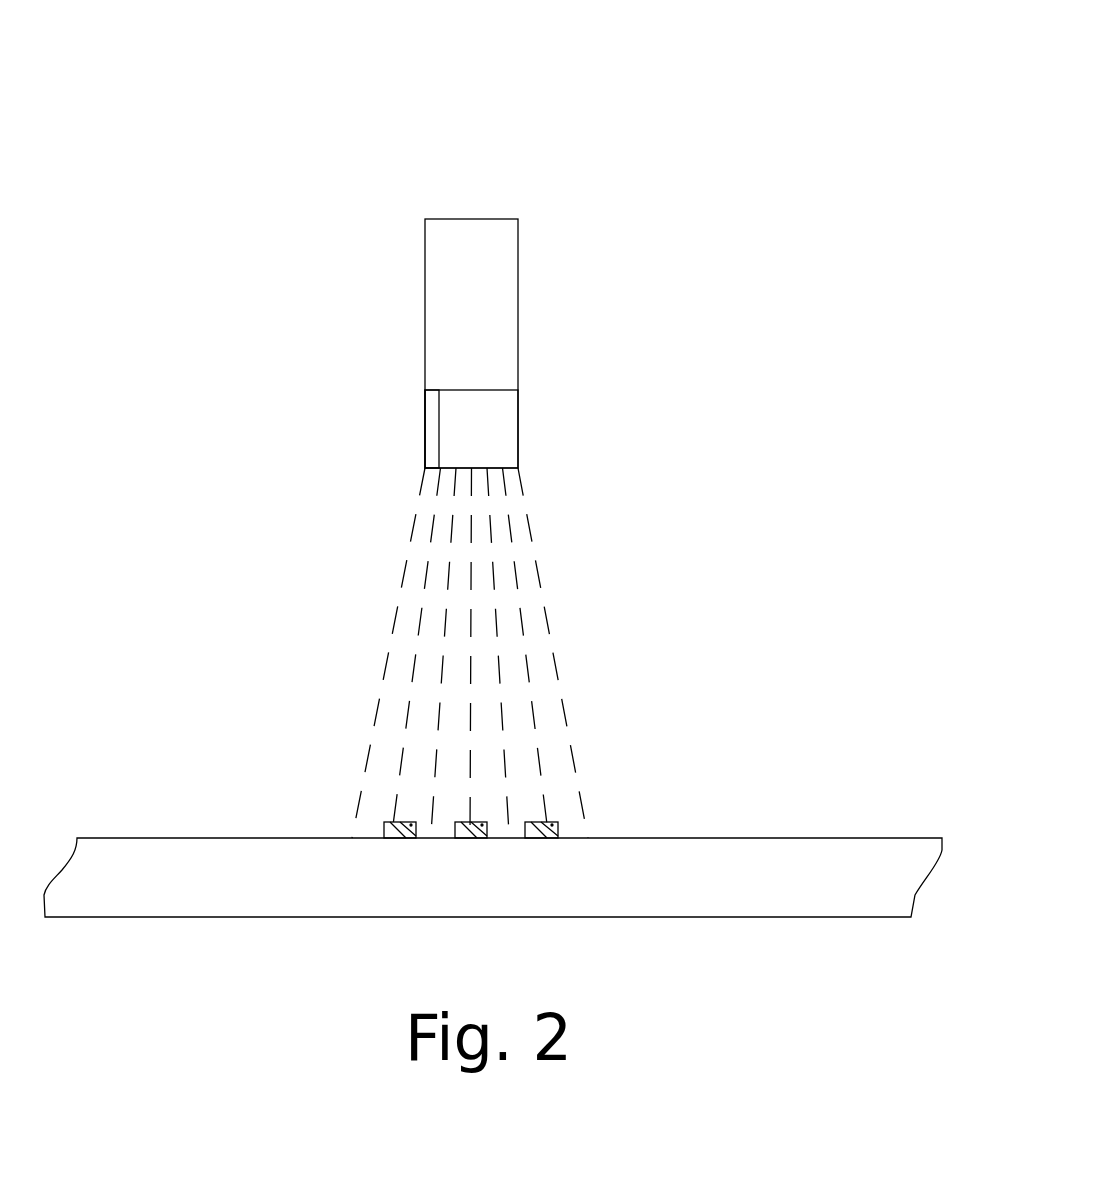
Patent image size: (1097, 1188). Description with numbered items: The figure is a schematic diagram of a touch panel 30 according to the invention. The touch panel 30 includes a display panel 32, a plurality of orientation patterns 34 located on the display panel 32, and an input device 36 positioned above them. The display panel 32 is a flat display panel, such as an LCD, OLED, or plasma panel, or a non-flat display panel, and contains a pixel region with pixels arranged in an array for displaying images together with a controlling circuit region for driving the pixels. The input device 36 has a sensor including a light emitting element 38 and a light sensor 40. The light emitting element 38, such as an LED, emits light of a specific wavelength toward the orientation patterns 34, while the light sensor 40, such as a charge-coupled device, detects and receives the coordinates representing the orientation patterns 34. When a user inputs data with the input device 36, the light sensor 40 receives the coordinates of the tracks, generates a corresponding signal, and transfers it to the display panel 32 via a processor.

The touch panel 30 is at (859, 56).
The display panel 32 is at (520, 903).
The orientation patterns 34 is at (608, 825).
The input device 36 is at (553, 196).
The light emitting element 38 is at (498, 422).
The light sensor 40 is at (432, 430).